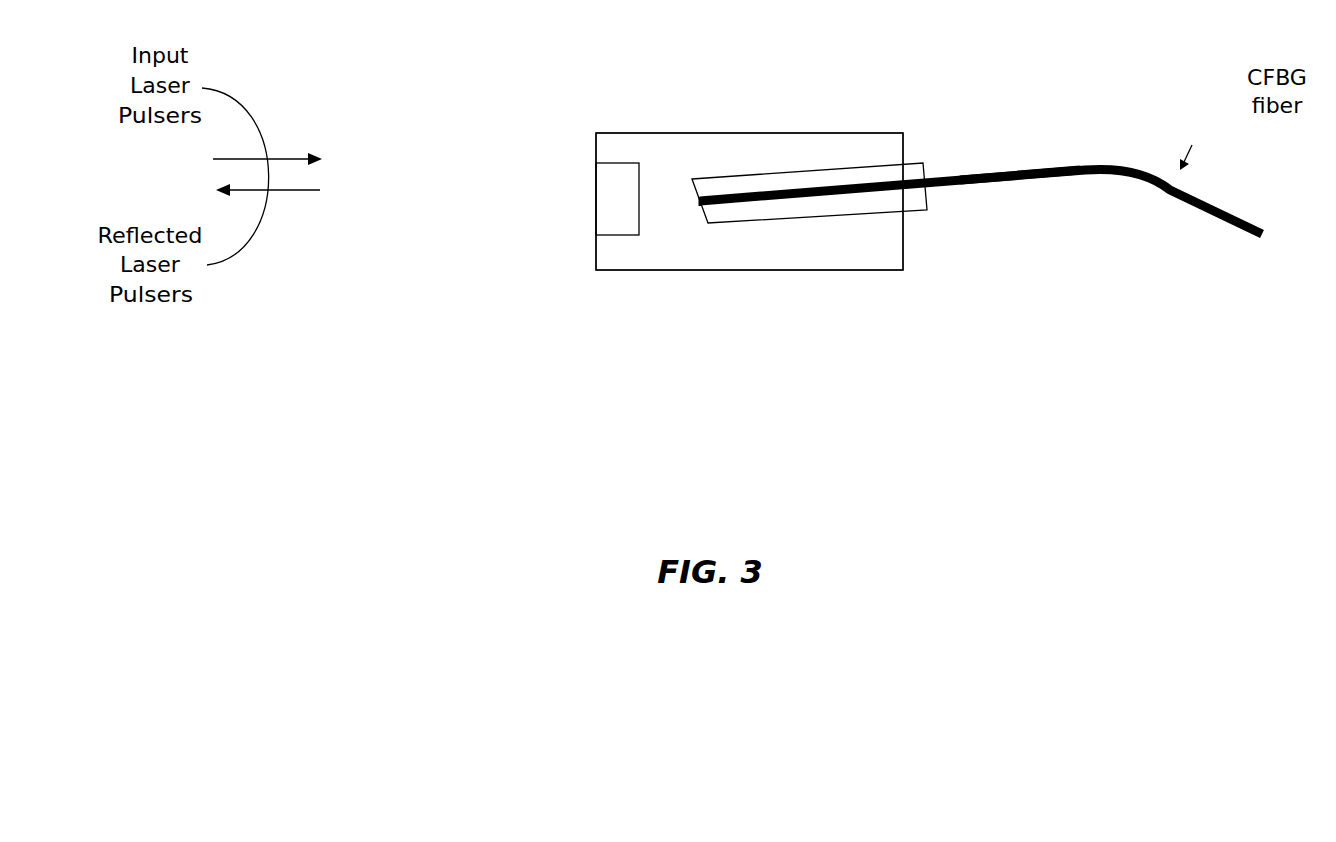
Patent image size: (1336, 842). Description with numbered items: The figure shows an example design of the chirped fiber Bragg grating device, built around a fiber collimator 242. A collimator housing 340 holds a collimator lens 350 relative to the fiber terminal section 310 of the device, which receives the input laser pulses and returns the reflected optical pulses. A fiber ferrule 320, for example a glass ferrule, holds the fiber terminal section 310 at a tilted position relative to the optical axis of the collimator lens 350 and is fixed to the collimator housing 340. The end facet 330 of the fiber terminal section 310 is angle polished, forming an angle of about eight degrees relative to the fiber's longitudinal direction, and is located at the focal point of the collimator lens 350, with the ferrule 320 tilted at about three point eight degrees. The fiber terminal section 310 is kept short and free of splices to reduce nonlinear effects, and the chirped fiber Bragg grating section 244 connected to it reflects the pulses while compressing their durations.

The fiber collimator 242 is at (612, 133).
The chirped fiber Bragg grating section 244 is at (1018, 152).
The fiber terminal section 310 is at (793, 192).
The fiber ferrule 320 is at (936, 221).
The end facet 330 is at (714, 250).
The collimator housing 340 is at (695, 236).
The collimator lens 350 is at (578, 195).